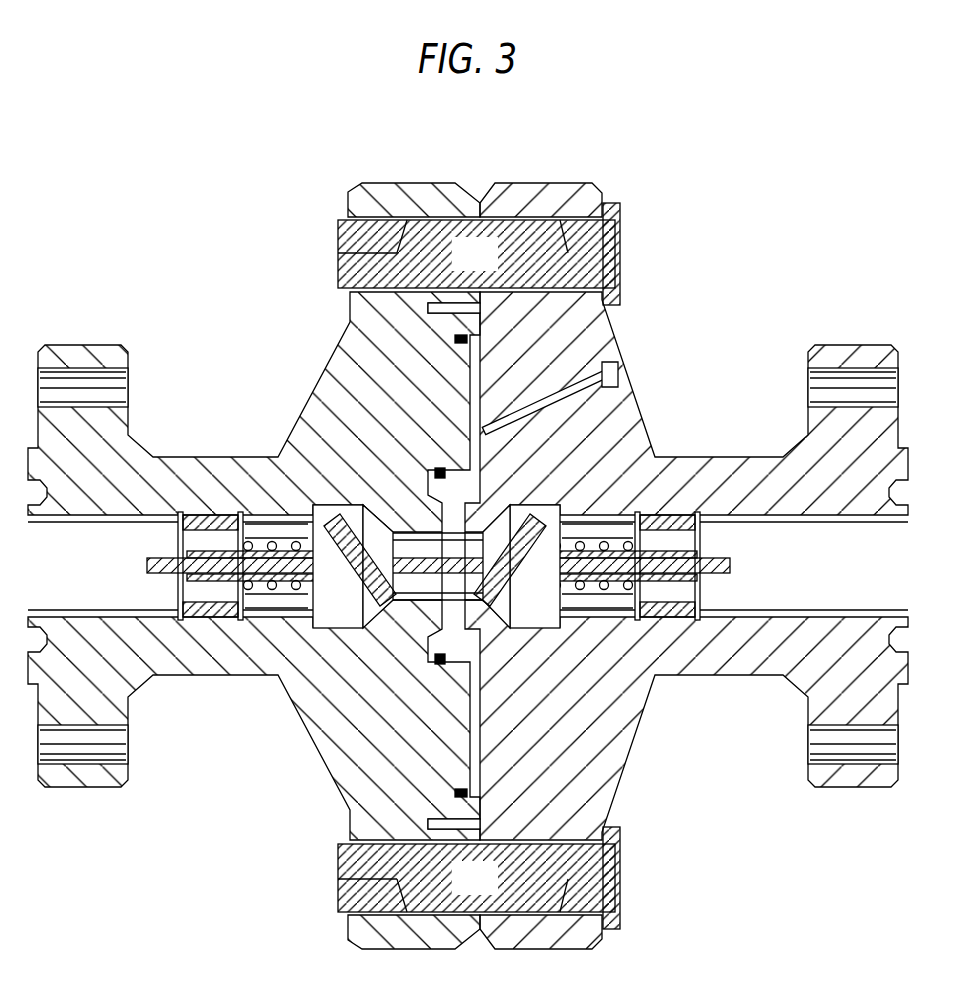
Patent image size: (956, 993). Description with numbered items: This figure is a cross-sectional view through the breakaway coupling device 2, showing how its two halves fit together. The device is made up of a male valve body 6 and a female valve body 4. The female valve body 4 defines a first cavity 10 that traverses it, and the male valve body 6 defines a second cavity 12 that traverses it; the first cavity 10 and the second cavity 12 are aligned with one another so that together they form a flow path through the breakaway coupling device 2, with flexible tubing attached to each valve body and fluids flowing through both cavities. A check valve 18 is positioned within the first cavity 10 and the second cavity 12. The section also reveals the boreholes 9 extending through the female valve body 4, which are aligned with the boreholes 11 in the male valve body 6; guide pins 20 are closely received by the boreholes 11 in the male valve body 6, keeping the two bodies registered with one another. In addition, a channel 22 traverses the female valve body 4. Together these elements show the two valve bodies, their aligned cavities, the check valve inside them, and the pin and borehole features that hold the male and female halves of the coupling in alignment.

The breakaway coupling device 2 is at (165, 241).
The female valve body 4 is at (850, 345).
The male valve body 6 is at (77, 345).
The boreholes 9 is at (620, 250).
The first cavity 10 is at (856, 586).
The boreholes 11 is at (338, 253).
The second cavity 12 is at (92, 586).
The check valve 18 is at (386, 626).
The guide pins 20 is at (462, 270).
The channel 22 is at (616, 370).